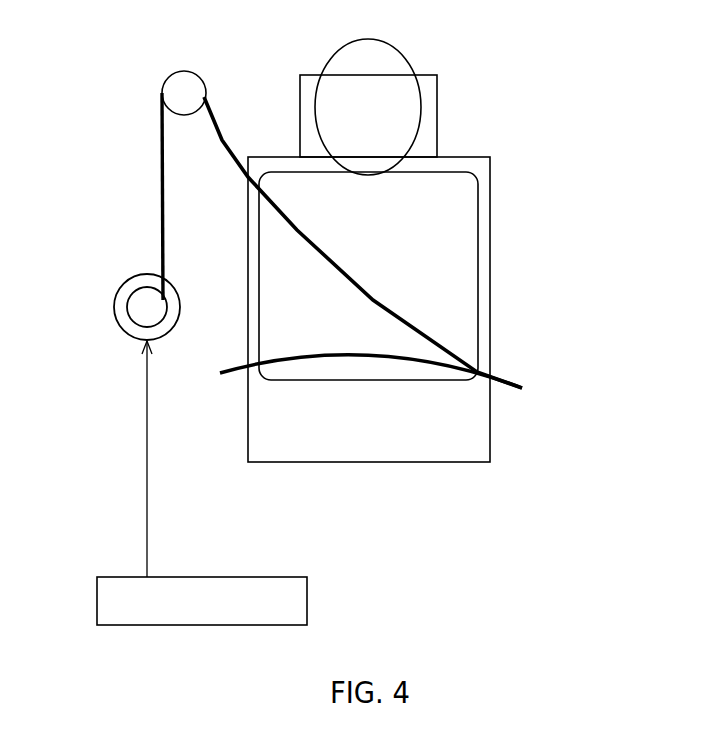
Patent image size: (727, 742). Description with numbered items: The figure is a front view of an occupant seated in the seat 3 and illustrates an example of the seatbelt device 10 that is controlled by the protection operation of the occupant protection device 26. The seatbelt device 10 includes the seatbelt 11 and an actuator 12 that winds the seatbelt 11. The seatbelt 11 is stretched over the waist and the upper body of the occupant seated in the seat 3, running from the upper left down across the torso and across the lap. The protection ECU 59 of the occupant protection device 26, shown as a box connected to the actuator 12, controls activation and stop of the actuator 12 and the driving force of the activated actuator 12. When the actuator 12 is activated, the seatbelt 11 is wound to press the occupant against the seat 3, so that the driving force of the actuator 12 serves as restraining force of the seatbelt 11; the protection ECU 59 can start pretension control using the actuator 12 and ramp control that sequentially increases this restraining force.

The seat 3 is at (318, 422).
The seatbelt device 10 is at (553, 225).
The seatbelt 11 is at (413, 333).
The actuator 12 is at (117, 315).
The protection ECU 59 is at (249, 484).
The occupant protection device 26 is at (310, 607).